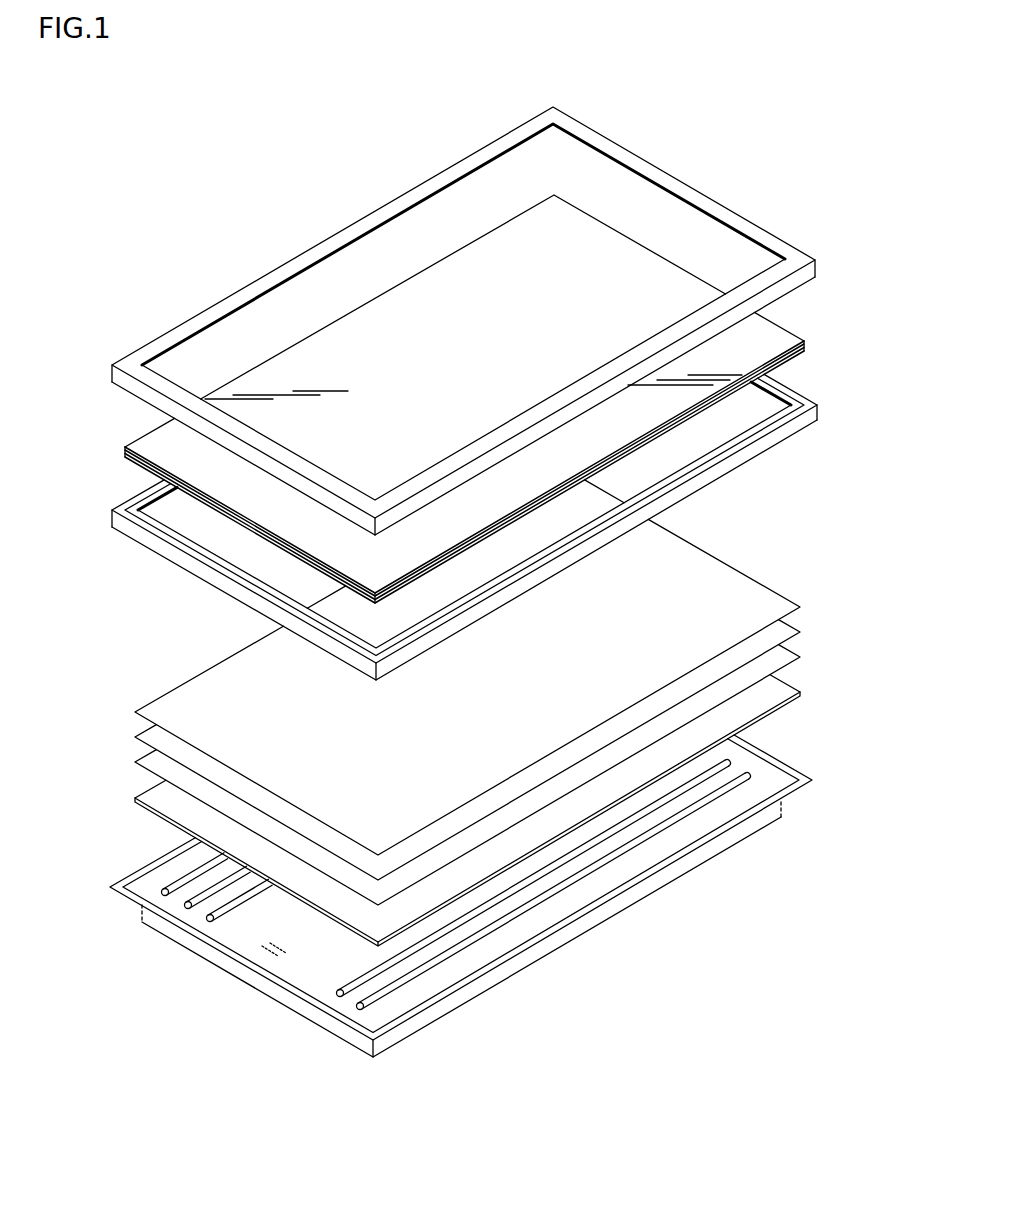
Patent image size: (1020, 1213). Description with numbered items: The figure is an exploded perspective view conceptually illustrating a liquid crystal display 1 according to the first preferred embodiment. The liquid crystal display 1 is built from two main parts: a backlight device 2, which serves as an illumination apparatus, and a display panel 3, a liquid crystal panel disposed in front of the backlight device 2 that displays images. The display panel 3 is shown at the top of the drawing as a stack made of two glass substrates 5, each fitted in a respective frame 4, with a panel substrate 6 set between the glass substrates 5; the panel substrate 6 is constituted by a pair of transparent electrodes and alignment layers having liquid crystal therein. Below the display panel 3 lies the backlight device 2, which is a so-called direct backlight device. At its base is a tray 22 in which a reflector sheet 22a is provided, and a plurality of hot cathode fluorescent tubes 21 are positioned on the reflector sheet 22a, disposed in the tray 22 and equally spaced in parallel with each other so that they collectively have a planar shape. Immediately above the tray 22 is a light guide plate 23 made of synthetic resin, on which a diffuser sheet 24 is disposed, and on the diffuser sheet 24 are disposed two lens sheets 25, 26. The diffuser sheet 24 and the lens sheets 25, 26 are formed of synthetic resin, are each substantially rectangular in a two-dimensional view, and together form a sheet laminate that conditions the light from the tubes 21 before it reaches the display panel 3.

The liquid crystal display 1 is at (370, 186).
The backlight device 2 is at (872, 570).
The display panel 3 is at (867, 209).
The frame 4 is at (792, 260).
The glass substrate 5 is at (730, 246).
The panel substrate 6 is at (775, 338).
The hot cathode fluorescent tube 21 is at (750, 782).
The tray 22 is at (806, 782).
The reflector sheet 22a is at (540, 912).
The light guide plate 23 is at (782, 693).
The diffuser sheet 24 is at (780, 655).
The lens sheet 25 is at (780, 630).
The lens sheet 26 is at (780, 605).